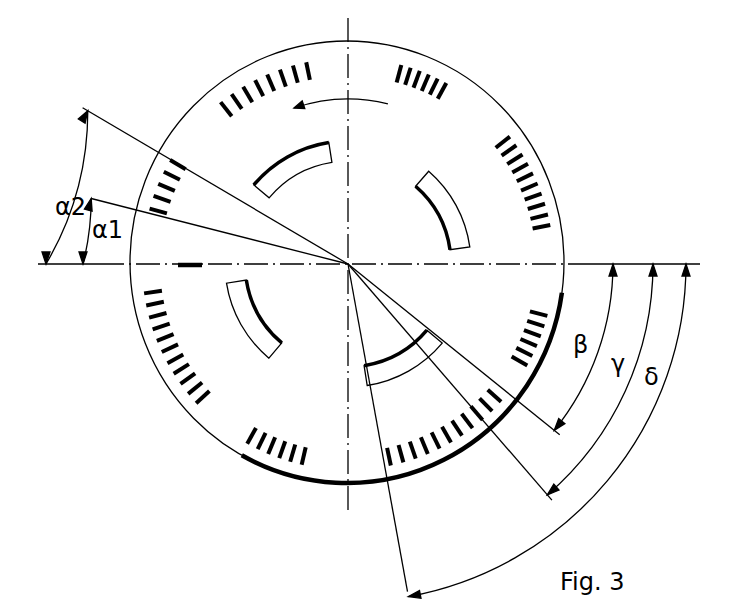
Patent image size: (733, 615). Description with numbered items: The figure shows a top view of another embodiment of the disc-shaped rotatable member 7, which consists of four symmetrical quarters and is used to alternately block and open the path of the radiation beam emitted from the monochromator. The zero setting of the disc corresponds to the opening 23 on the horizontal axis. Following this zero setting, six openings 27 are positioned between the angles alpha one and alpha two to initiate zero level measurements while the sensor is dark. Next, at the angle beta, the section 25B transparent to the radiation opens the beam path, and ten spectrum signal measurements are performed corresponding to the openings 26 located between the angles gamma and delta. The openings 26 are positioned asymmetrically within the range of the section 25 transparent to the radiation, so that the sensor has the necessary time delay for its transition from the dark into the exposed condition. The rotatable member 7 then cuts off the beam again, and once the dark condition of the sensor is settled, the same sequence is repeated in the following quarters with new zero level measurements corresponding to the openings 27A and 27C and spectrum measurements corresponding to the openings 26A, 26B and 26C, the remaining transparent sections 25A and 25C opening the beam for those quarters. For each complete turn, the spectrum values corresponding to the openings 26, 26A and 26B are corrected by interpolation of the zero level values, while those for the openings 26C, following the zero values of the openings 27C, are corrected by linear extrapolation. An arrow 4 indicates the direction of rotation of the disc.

The direction of rotation arrow 4 is at (360, 98).
The rotatable member 7 is at (455, 118).
The opening 23 is at (192, 270).
The section transparent to the radiation 25 is at (275, 178).
The rotor slot 25A is at (437, 195).
The section transparent to the radiation 25B is at (382, 372).
The rotor slot 25C is at (263, 343).
The openings 26 is at (254, 77).
The openings 26A is at (540, 190).
The openings 26B is at (413, 457).
The openings 26C is at (156, 325).
The openings 27 is at (160, 200).
The openings 27A is at (432, 75).
The openings 27C is at (252, 437).